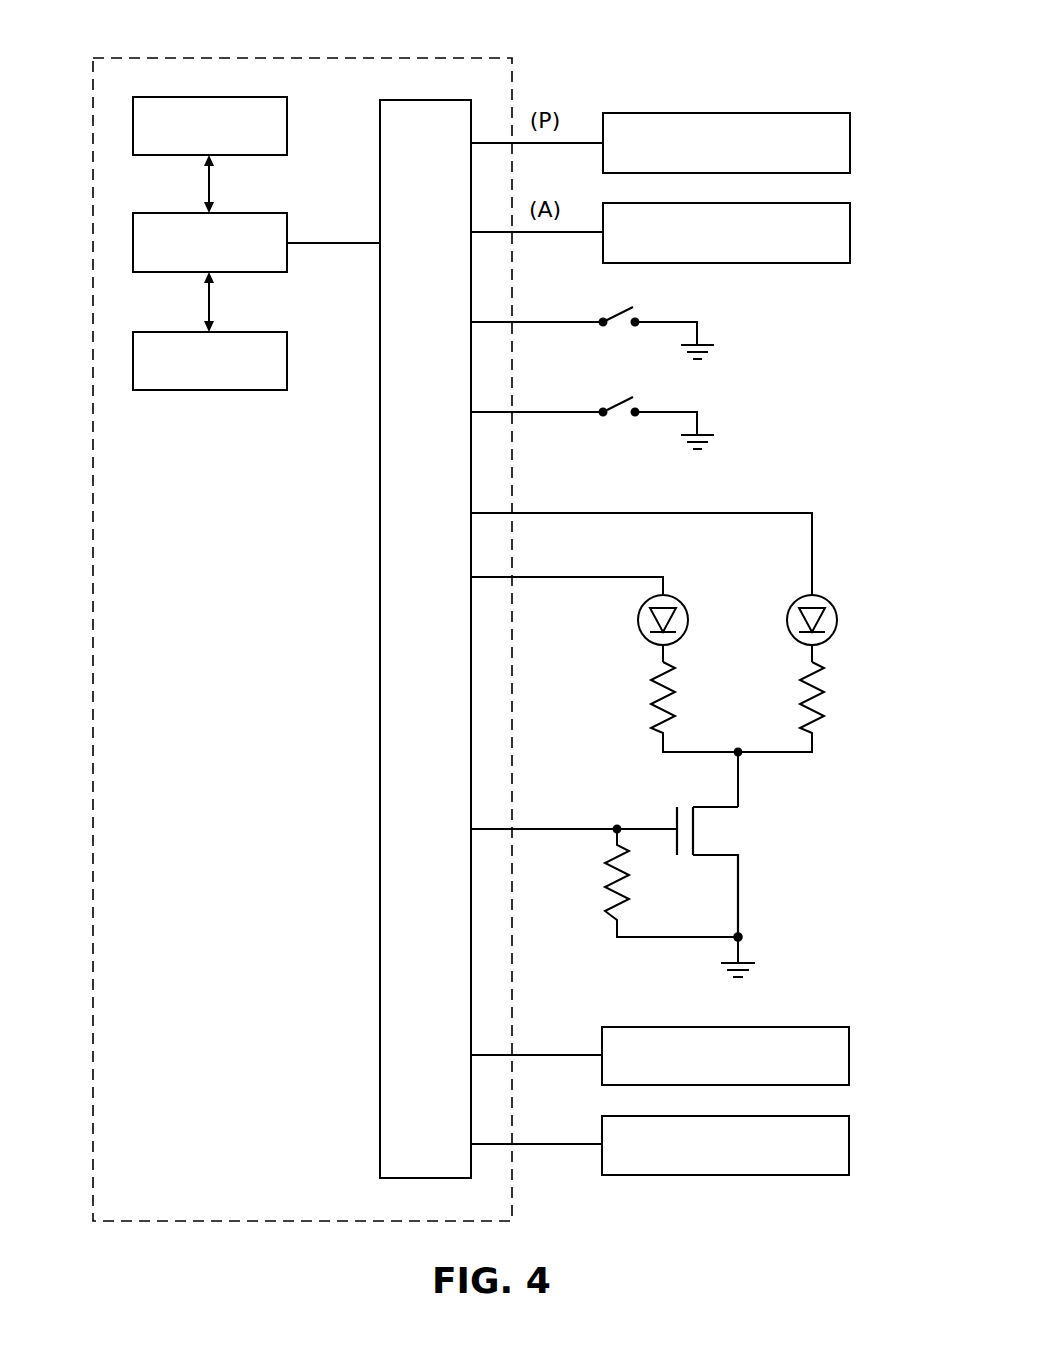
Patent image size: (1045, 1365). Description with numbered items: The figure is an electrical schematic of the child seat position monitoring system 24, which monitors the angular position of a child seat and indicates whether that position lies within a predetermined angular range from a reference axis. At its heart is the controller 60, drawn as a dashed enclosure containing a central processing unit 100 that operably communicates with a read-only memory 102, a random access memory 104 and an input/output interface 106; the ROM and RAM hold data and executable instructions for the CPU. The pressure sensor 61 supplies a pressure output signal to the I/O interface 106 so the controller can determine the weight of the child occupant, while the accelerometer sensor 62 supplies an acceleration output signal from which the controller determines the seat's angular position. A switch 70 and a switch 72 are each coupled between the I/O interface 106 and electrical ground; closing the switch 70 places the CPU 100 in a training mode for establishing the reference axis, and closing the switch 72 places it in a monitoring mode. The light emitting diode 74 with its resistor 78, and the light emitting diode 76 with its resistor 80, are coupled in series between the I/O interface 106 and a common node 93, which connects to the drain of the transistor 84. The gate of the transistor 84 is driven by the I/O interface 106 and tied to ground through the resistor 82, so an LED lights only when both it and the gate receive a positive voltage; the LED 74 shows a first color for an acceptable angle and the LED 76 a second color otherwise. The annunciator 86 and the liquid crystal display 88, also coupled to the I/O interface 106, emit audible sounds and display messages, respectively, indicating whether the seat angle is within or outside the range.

The child seat position monitoring system 24 is at (846, 66).
The controller 60 is at (490, 50).
The pressure sensor 61 is at (843, 113).
The accelerometer sensor 62 is at (843, 203).
The switch 70 is at (613, 316).
The switch 72 is at (613, 406).
The light emitting diode 74 is at (681, 604).
The light emitting diode 76 is at (830, 604).
The resistor 78 is at (659, 710).
The resistor 80 is at (823, 706).
The resistor 82 is at (611, 888).
The transistor 84 is at (743, 850).
The annunciator 86 is at (828, 1027).
The liquid crystal display 88 is at (828, 1116).
The node 93 is at (738, 750).
The central processing unit 100 is at (150, 213).
The read-only memory 102 is at (150, 97).
The random access memory 104 is at (150, 332).
The input/output interface 106 is at (403, 100).